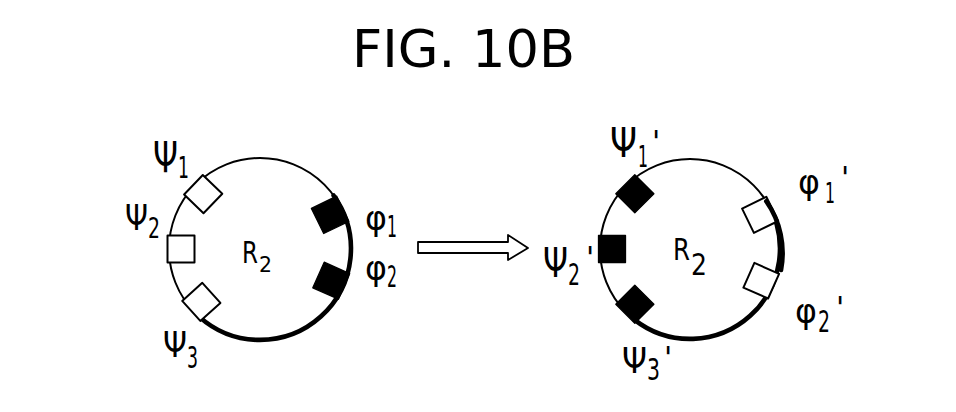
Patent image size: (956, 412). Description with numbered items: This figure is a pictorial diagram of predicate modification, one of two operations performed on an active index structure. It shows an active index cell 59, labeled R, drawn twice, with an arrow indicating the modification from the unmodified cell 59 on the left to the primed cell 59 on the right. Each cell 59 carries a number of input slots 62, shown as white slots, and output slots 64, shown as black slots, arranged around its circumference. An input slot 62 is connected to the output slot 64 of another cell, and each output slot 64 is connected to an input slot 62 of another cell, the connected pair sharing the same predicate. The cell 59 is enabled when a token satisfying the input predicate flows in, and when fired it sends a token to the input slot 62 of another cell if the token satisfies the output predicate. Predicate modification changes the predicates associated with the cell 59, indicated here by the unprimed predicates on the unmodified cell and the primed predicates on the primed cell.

The active index cell 59 is at (293, 161).
The input slot 62 is at (182, 195).
The output slot 64 is at (343, 210).